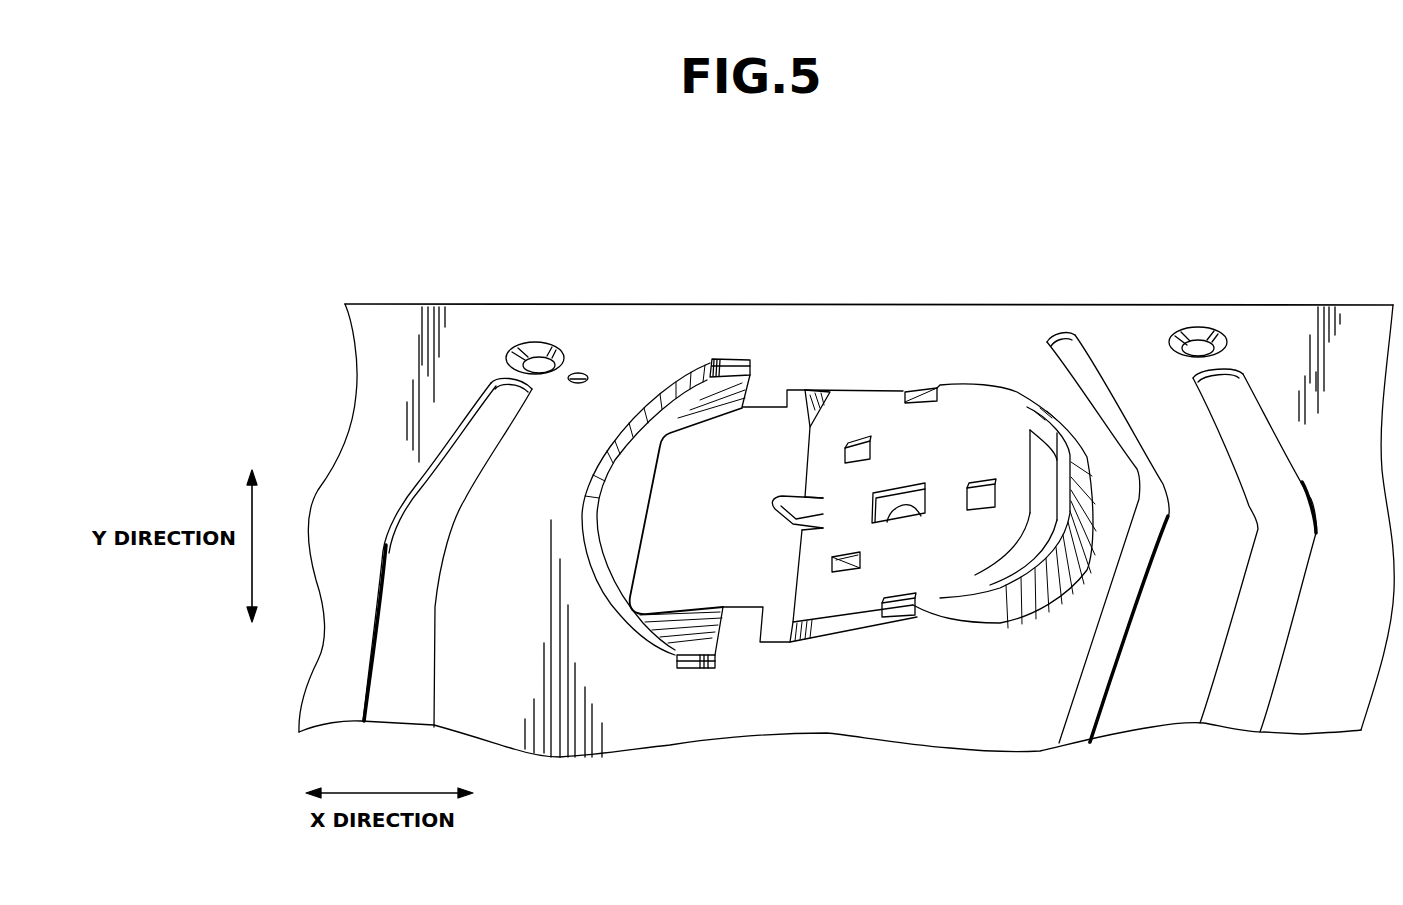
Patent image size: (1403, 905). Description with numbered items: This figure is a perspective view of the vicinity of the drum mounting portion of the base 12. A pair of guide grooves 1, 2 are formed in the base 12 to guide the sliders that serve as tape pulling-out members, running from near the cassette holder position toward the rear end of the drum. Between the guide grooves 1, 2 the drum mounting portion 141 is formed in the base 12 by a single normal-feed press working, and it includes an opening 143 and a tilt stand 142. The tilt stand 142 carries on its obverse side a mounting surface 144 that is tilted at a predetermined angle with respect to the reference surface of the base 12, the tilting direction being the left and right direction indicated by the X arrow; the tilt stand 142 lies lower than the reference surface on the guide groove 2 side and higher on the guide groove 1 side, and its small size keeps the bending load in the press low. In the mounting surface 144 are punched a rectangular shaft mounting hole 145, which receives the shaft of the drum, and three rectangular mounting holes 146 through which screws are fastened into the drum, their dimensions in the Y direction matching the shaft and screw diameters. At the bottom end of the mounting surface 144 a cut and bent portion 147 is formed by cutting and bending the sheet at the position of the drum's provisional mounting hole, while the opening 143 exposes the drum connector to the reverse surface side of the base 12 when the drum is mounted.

The guide groove 1 is at (1283, 432).
The guide groove 2 is at (437, 635).
The base 12 is at (585, 333).
The drum mounting portion 141 is at (817, 348).
The tilt stand 142 is at (940, 386).
The opening 143 is at (715, 455).
The mounting surface 144 is at (978, 400).
The shaft mounting hole 145 is at (918, 517).
The mounting hole 146 is at (851, 440).
The cut and bent portion 147 is at (775, 498).